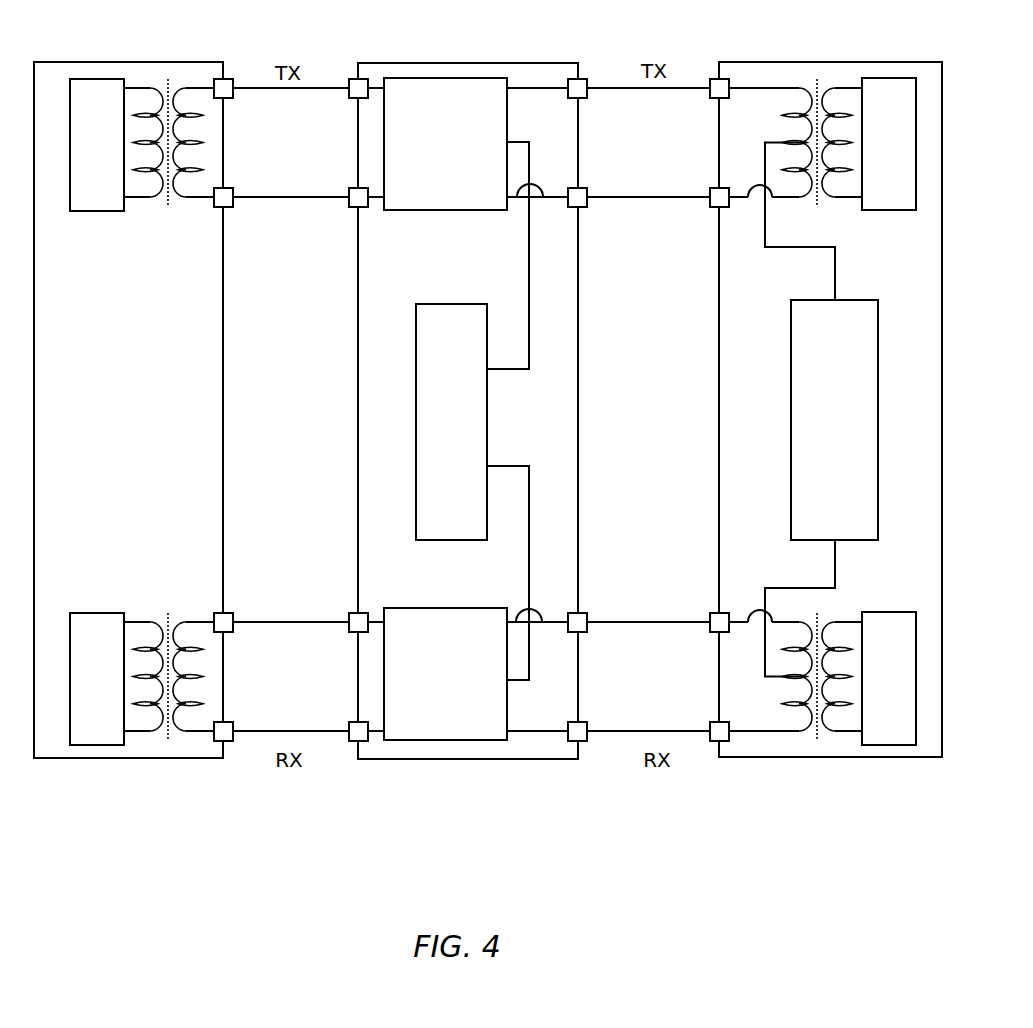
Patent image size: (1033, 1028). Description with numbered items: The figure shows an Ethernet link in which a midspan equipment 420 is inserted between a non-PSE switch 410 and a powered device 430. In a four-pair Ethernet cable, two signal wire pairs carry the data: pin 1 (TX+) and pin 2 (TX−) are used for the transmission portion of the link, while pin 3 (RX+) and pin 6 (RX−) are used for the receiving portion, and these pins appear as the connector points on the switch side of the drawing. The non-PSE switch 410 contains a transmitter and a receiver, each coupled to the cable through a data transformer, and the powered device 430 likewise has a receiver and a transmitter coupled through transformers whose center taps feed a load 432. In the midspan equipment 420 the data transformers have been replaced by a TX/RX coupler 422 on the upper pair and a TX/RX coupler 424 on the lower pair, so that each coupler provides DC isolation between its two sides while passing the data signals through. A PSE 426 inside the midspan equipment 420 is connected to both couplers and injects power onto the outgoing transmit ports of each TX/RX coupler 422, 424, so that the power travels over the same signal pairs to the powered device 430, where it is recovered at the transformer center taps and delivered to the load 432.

The non-PSE switch 410 is at (120, 62).
The midspan equipment 420 is at (468, 415).
The TX/RX coupler 422 is at (446, 78).
The TX/RX coupler 424 is at (436, 608).
The PSE 426 is at (457, 304).
The powered device 430 is at (826, 415).
The load 432 is at (878, 300).
The pin 1 (TX+) 1 is at (229, 106).
The pin 2 (TX−) 2 is at (229, 212).
The pin 3 (RX+) 3 is at (229, 639).
The pin 6 (RX−) 6 is at (229, 746).